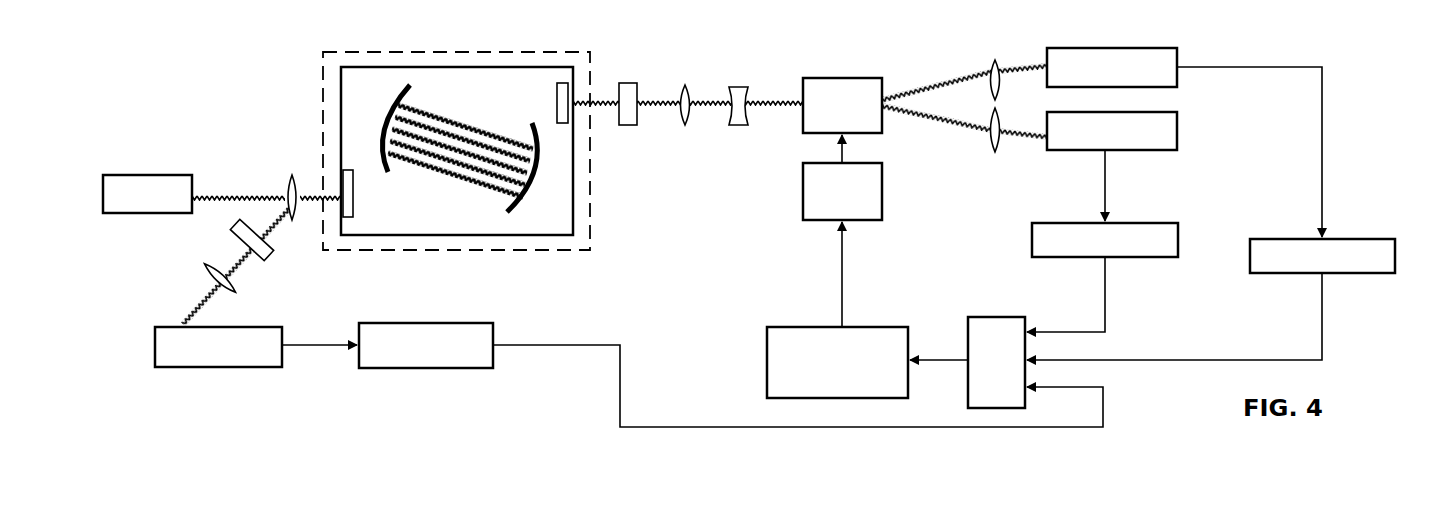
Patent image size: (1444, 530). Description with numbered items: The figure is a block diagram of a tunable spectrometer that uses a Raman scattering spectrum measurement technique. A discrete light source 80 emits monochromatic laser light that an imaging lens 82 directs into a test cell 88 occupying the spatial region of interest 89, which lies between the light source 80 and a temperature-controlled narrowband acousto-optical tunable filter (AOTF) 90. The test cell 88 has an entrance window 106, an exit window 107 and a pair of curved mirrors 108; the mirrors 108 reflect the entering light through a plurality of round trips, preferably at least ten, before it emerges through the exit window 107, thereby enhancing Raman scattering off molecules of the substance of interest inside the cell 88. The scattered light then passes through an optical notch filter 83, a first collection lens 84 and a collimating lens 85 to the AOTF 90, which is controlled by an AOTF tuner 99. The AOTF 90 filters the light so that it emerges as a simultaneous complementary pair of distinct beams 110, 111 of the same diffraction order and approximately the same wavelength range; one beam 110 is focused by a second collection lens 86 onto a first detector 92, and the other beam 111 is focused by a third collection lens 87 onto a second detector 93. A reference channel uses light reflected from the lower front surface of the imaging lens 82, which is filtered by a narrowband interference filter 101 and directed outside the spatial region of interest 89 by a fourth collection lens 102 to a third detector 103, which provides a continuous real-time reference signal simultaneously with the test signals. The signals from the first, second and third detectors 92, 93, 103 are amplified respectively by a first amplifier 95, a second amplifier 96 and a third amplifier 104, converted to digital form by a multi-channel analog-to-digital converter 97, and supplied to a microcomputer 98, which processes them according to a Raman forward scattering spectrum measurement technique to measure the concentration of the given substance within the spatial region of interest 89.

The discrete light source 80 is at (170, 175).
The imaging lens 82 is at (293, 175).
The optical notch filter 83 is at (628, 83).
The first collection lens 84 is at (685, 85).
The collimating lens 85 is at (740, 87).
The second collection lens 86 is at (997, 152).
The third collection lens 87 is at (995, 60).
The test cell 88 is at (422, 67).
The spatial region of interest 89 is at (497, 52).
The acousto-optical tunable filter (AOTF) 90 is at (845, 78).
The first detector 92 is at (1160, 112).
The second detector 93 is at (1140, 48).
The first amplifier 95 is at (1160, 223).
The second amplifier 96 is at (1378, 239).
The multi-channel analog to digital convertor 97 is at (992, 317).
The microcomputer 98 is at (858, 327).
The AOTF tuner 99 is at (866, 163).
The narrowband interference filter 101 is at (264, 252).
The fourth collection lens 102 is at (205, 275).
The third detector 103 is at (268, 327).
The third amplifier 104 is at (458, 323).
The entrance window 106 is at (355, 210).
The exit window 107 is at (557, 93).
The mirrors 108 is at (386, 122).
The beam 110 is at (942, 120).
The beam 111 is at (945, 90).